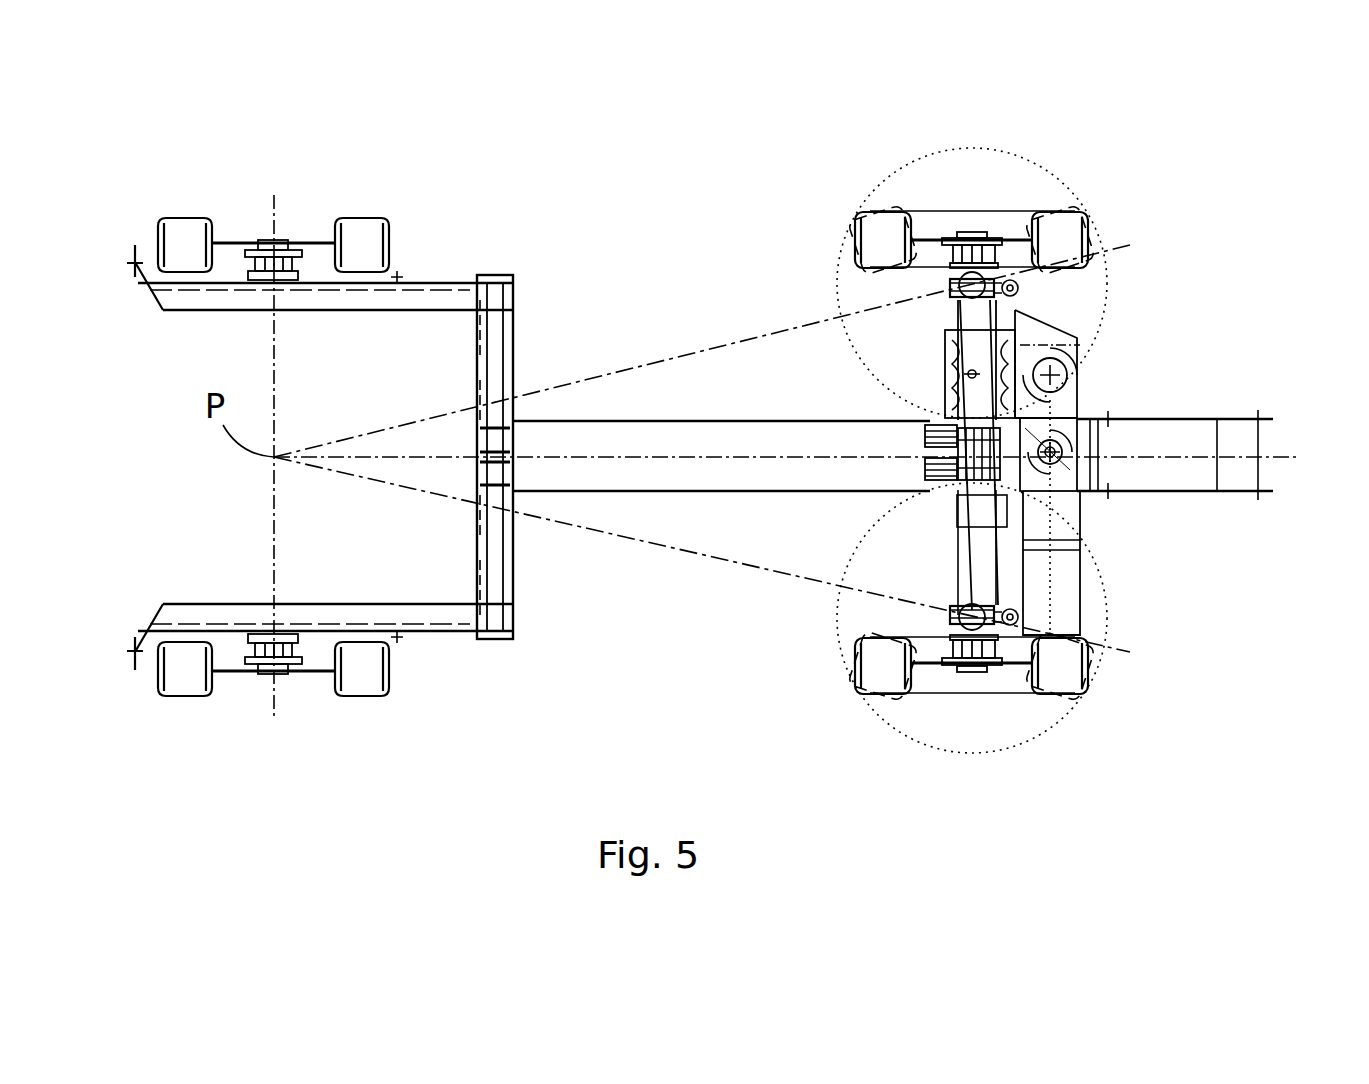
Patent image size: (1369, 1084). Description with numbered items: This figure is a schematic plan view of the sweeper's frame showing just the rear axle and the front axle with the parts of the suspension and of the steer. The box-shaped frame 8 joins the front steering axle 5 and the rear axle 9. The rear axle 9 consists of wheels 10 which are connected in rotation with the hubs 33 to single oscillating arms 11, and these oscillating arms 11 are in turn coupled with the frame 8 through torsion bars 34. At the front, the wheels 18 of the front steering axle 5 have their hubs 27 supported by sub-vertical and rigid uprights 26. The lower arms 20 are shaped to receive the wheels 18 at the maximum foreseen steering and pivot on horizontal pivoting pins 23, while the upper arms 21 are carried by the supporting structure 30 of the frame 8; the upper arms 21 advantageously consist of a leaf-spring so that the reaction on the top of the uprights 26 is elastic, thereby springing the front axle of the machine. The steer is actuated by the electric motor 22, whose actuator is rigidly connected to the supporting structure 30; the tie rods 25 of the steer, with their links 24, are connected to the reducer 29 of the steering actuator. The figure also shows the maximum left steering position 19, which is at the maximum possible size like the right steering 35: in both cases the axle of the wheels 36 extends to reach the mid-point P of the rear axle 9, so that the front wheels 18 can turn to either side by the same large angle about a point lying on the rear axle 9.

The front steering axle 5 is at (1056, 790).
The box-shaped frame 8 is at (515, 348).
The rear axle 9 is at (421, 241).
The wheels 10 is at (172, 230).
The oscillating arms 11 is at (366, 307).
The wheels 18 is at (865, 240).
The maximum steering rotation 19 is at (883, 182).
The lower arms 20 is at (1020, 300).
The upper arms 21 is at (948, 320).
The electric motor 22 is at (1070, 572).
The horizontal pivoting pins 23 is at (925, 430).
The links 24 is at (1005, 290).
The tie rods 25 is at (1085, 340).
The uprights 26 is at (952, 290).
The hubs 27 is at (968, 232).
The reducer 29 is at (1117, 467).
The supporting structure 30 is at (975, 480).
The hubs 33 is at (280, 240).
The torsion bars 34 is at (493, 348).
The right steering 35 is at (1025, 190).
The axle of the wheels 36 is at (655, 362).